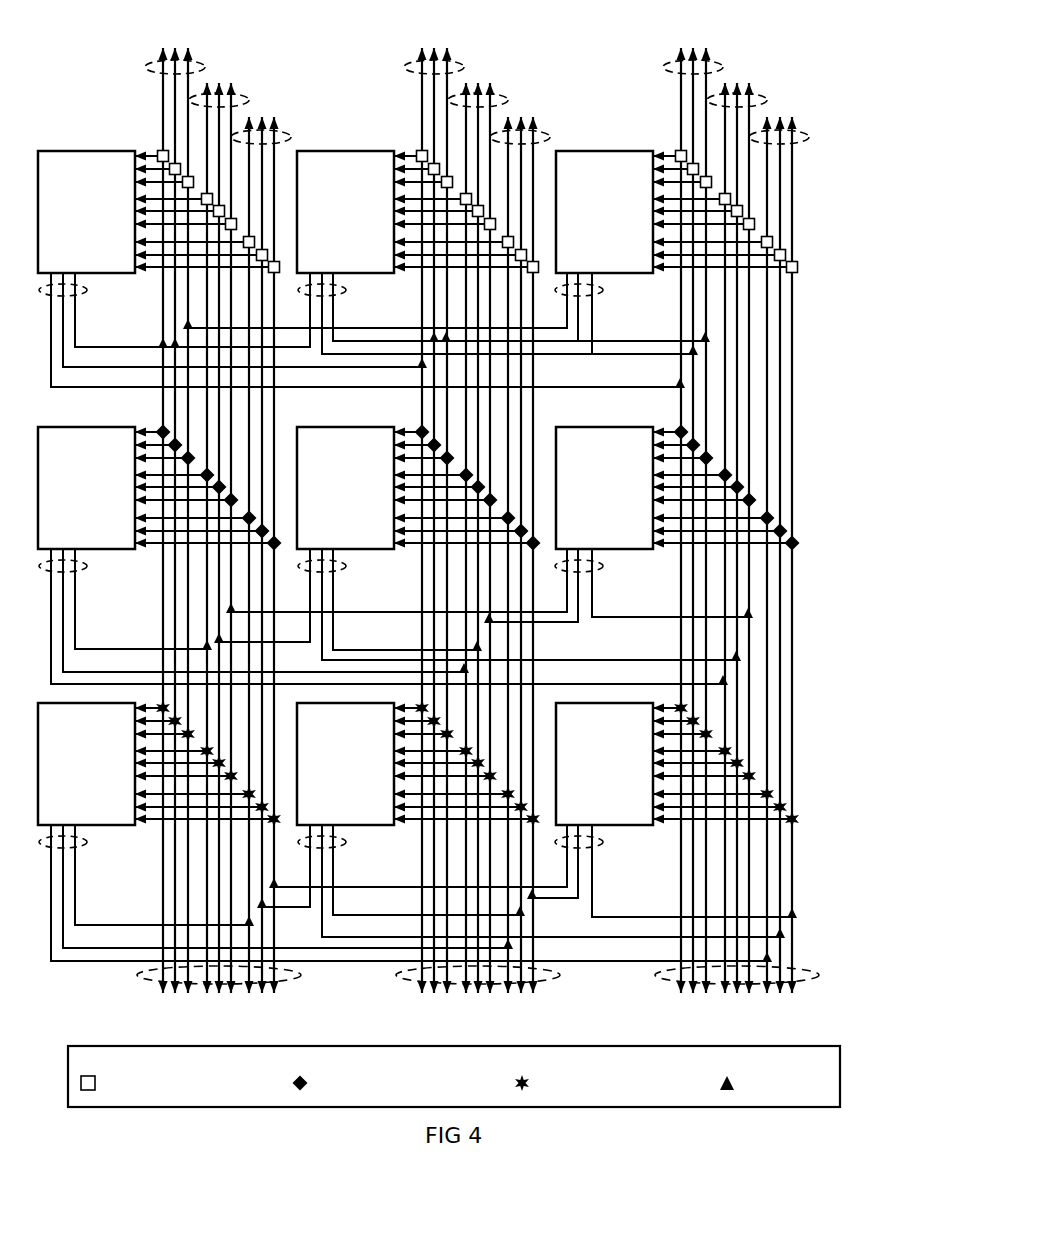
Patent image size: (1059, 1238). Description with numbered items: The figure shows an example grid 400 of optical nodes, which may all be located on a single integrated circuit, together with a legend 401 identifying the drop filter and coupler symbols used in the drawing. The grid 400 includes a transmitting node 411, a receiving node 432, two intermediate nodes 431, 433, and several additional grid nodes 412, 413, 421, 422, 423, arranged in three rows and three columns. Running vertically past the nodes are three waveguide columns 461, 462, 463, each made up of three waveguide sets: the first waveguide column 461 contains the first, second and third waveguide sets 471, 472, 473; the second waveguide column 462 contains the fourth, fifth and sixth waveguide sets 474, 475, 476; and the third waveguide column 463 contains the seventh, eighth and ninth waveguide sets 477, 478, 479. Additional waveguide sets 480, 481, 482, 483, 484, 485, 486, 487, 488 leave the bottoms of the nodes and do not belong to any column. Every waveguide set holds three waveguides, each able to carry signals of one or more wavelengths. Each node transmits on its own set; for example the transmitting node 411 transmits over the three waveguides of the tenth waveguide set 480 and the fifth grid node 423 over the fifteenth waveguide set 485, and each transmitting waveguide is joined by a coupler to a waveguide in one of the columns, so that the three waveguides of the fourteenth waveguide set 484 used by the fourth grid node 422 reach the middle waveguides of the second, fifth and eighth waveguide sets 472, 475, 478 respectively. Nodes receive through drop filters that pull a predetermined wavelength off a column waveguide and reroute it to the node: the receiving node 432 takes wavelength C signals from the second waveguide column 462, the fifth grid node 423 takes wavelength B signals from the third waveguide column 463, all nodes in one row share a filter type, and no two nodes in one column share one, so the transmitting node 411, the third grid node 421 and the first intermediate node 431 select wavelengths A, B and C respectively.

The grid 400 is at (115, 50).
The legend 401 is at (454, 1076).
The TX Node 411 is at (159, 212).
The Grid Node 1 412 is at (418, 212).
The Grid Node 2 413 is at (677, 212).
The Grid Node 3 421 is at (160, 488).
The Grid Node 4 422 is at (419, 488).
The Grid Node 5 423 is at (678, 488).
The Intermediate Node 1 431 is at (159, 763).
The RX Node 432 is at (418, 763).
The Intermediate Node 2 433 is at (677, 763).
The Waveguide Column 1 461 is at (259, 541).
The Waveguide Column 2 462 is at (518, 541).
The Waveguide Column 3 463 is at (777, 541).
The WS 1 471 is at (204, 60).
The WS 2 472 is at (247, 97).
The WS 3 473 is at (290, 134).
The WS 4 474 is at (463, 60).
The WS 5 475 is at (506, 97).
The WS 6 476 is at (549, 134).
The WS 7 477 is at (722, 60).
The WS 8 478 is at (765, 97).
The WS 9 479 is at (808, 134).
The WS 10 480 is at (86, 292).
The WS 11 481 is at (345, 292).
The WS 12 482 is at (604, 294).
The WS 13 483 is at (88, 570).
The WS 14 484 is at (347, 570).
The WS 15 485 is at (605, 567).
The WS 16 486 is at (88, 846).
The WS 17 487 is at (347, 846).
The WS 18 488 is at (606, 850).